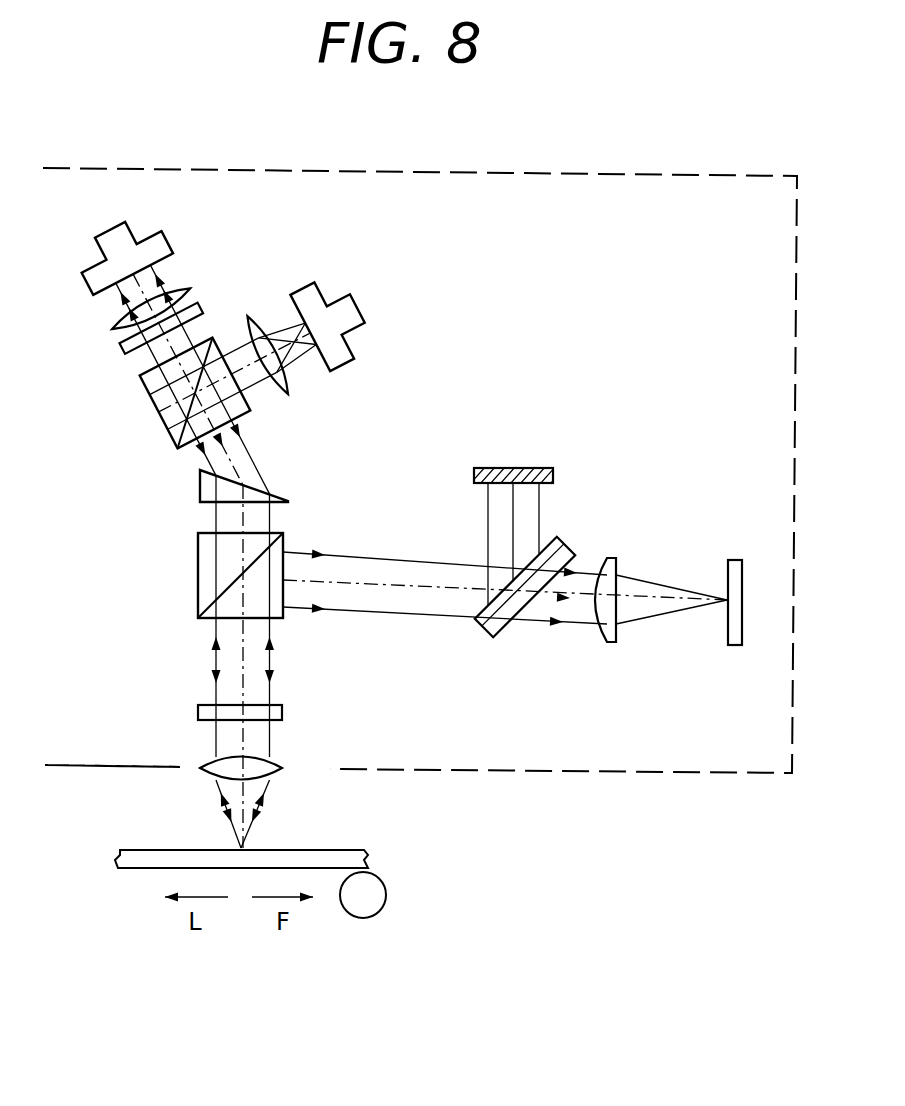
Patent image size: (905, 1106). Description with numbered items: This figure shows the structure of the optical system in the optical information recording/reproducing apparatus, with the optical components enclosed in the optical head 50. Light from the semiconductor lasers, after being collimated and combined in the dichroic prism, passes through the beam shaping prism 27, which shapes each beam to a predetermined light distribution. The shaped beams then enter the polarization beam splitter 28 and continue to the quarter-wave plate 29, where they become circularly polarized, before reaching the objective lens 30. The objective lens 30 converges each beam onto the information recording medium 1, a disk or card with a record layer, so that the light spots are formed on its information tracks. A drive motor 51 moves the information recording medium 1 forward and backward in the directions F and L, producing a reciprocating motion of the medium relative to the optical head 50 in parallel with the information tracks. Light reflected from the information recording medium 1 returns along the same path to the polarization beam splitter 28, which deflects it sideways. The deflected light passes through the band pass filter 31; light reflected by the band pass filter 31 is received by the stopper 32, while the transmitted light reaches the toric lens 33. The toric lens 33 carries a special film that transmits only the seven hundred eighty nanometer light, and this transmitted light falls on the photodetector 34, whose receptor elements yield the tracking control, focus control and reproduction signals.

The information recording medium 1 is at (348, 860).
The beam shaping prism 27 is at (274, 492).
The polarization beam splitter 28 is at (198, 561).
The quarter-wave plate 29 is at (198, 710).
The objective lens 30 is at (200, 767).
The band pass filter 31 is at (570, 552).
The stopper 32 is at (543, 467).
The toric lens 33 is at (612, 558).
The photodetector 34 is at (735, 560).
The optical head 50 is at (678, 175).
The drive motor 51 is at (388, 890).